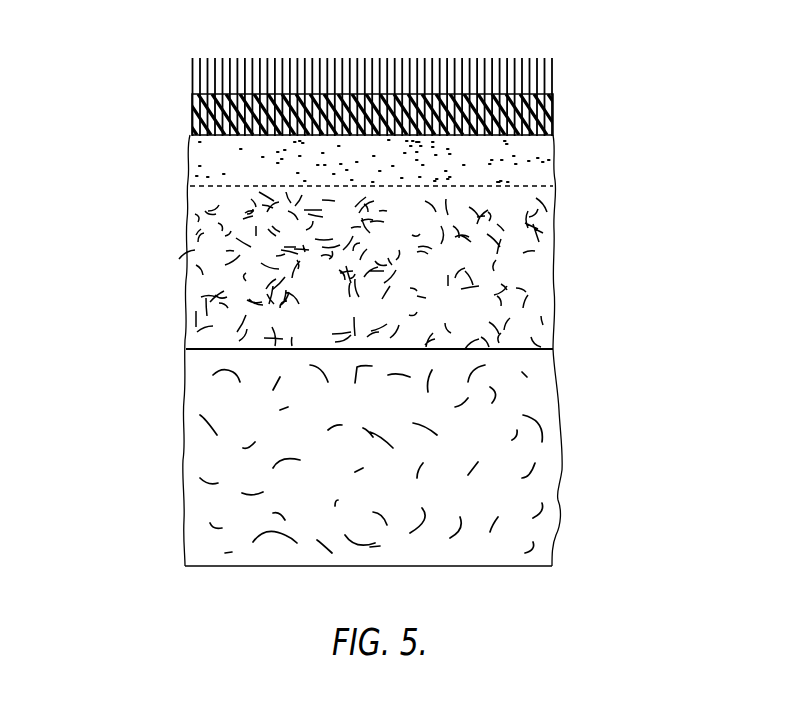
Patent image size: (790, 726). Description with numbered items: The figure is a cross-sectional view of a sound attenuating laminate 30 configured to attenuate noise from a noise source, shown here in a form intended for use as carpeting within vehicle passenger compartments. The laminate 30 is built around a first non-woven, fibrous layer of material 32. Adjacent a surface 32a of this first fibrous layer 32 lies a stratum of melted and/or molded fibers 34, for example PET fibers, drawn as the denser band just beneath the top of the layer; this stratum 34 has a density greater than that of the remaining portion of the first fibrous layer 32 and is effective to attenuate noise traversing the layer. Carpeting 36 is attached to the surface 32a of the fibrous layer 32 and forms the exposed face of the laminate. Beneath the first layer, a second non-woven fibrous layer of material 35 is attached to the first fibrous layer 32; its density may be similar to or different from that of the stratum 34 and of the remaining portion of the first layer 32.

The sound attenuating laminate 30 is at (616, 108).
The first non-woven fibrous layer of material 32 is at (188, 208).
The surface of the first fibrous layer 32a is at (191, 131).
The stratum of melted and/or molded fibers 34 is at (530, 162).
The second non-woven fibrous layer of material 35 is at (182, 480).
The carpeting 36 is at (385, 62).